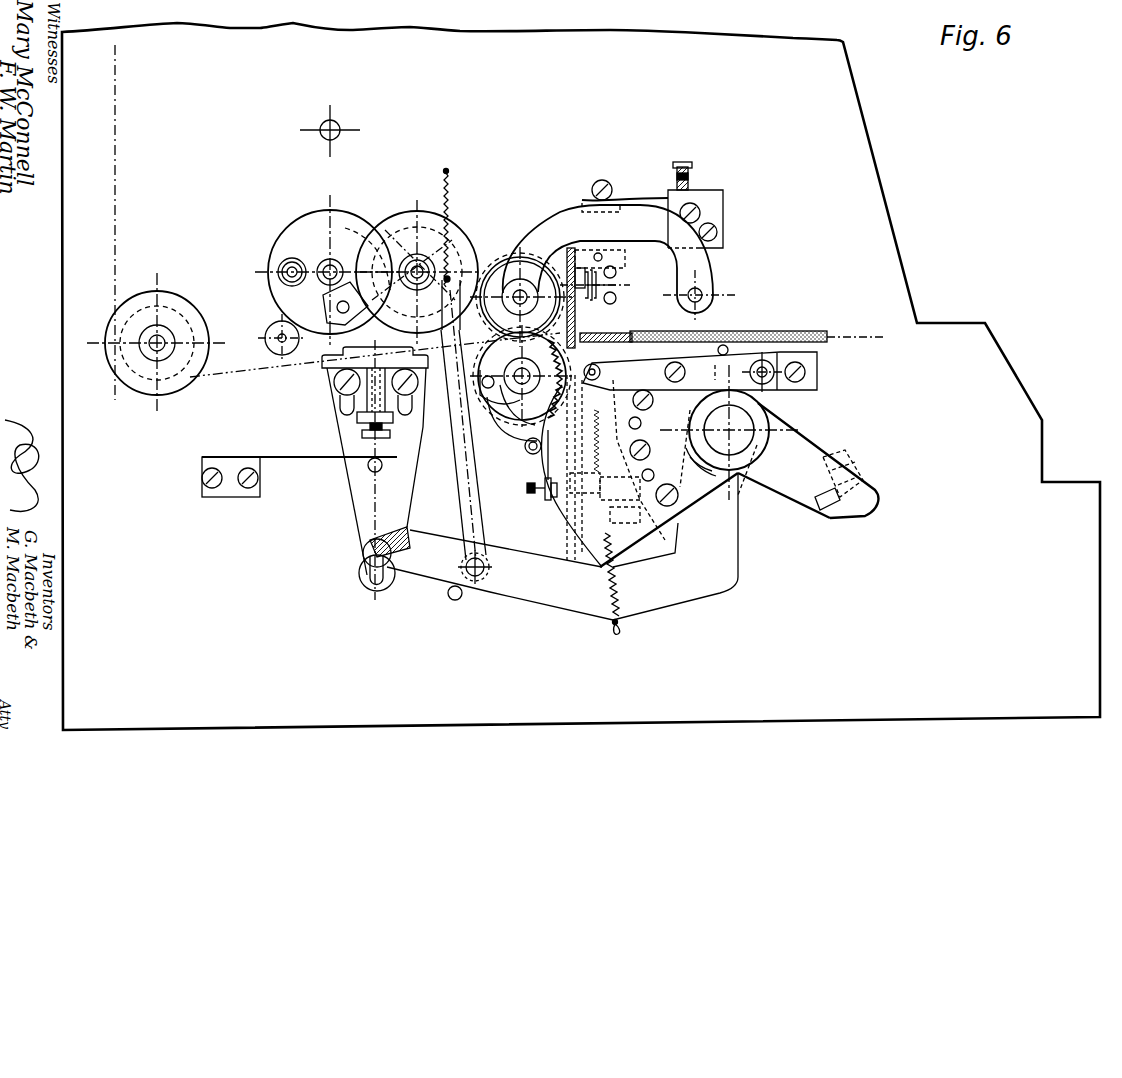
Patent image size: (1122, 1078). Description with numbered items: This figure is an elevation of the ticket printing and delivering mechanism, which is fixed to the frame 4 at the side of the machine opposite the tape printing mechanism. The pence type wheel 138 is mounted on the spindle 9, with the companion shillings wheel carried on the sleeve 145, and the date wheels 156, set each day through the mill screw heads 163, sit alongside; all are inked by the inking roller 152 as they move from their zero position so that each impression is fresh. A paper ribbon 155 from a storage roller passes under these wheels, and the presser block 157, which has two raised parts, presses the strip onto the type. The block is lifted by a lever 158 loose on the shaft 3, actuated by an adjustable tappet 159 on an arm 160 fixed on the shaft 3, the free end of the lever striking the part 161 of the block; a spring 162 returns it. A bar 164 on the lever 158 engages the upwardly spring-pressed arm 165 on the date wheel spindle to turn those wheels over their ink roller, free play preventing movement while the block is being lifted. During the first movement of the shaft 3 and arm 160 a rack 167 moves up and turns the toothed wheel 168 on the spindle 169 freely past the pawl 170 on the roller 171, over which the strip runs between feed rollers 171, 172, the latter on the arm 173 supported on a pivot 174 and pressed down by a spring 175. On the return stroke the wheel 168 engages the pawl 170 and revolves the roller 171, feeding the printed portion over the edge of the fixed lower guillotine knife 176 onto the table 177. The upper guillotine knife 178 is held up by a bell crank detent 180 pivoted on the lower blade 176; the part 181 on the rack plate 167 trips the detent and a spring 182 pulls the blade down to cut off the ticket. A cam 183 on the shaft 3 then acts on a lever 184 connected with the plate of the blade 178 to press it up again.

The shaft 3 is at (740, 423).
The frame 4 is at (72, 103).
The spindle 9 is at (324, 265).
The pence type wheel 138 is at (296, 288).
The sleeve 145 is at (338, 260).
The inking roller 152 is at (325, 307).
The paper ribbon 155 is at (117, 210).
The date wheel 156 is at (411, 215).
The presser block 157 is at (332, 362).
The lever 158 is at (393, 557).
The adjustable tappet 159 is at (838, 513).
The arm 160 is at (820, 447).
The part of the presser block 161 is at (362, 436).
The spring 162 is at (312, 458).
The mill screw head 163 is at (403, 312).
The bar 164 is at (466, 490).
The spring-pressed arm 165 is at (468, 250).
The rack 167 is at (524, 446).
The toothed wheel 168 is at (528, 333).
The spindle 169 is at (505, 355).
The pawl 170 is at (512, 400).
The feed roller 171 is at (511, 410).
The feed roller 172 is at (502, 267).
The arm 173 is at (573, 222).
The pivot 174 is at (708, 291).
The spring 175 is at (645, 200).
The lower guillotine knife 176 is at (577, 366).
The table 177 is at (626, 341).
The upper guillotine knife 178 is at (582, 330).
The bell crank detent 180 is at (558, 502).
The part of the rack plate 181 is at (660, 517).
The spring 182 is at (605, 430).
The cam 183 is at (712, 470).
The lever 184 is at (702, 370).